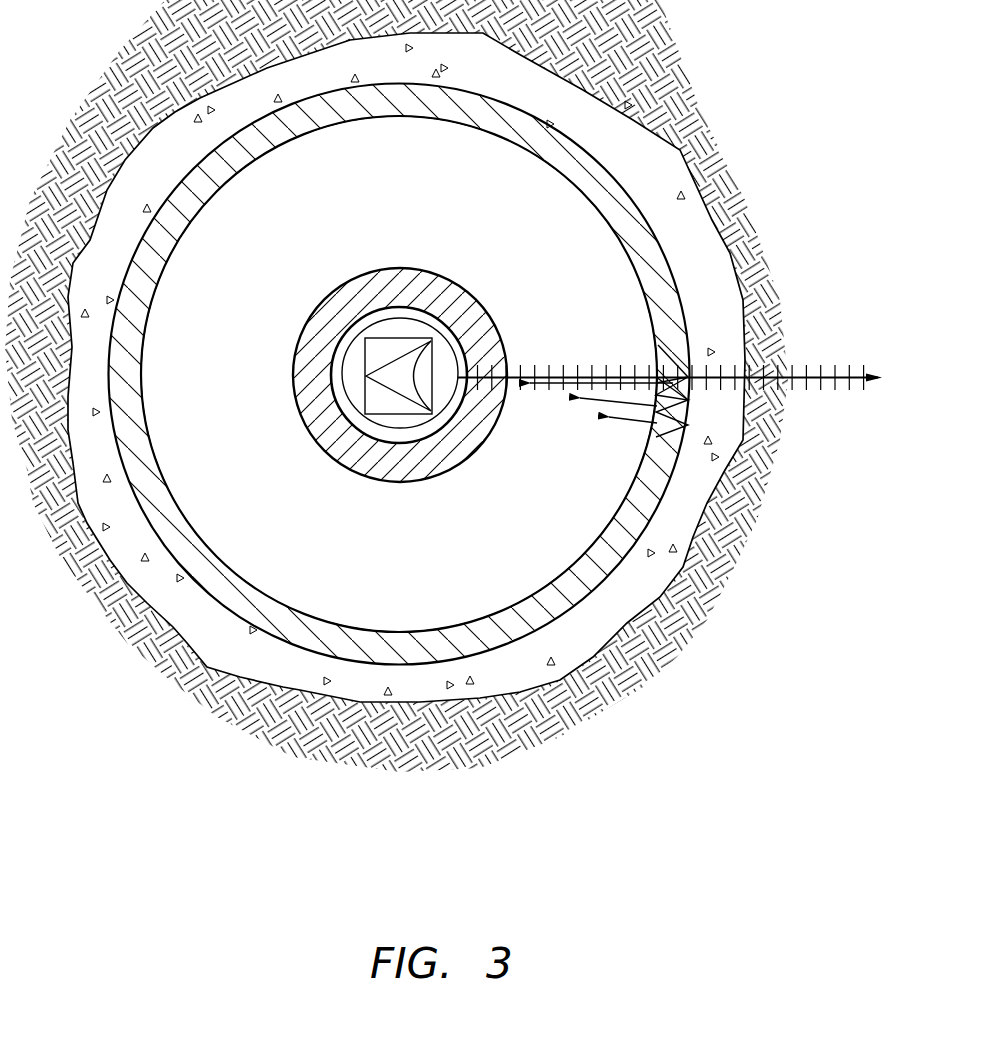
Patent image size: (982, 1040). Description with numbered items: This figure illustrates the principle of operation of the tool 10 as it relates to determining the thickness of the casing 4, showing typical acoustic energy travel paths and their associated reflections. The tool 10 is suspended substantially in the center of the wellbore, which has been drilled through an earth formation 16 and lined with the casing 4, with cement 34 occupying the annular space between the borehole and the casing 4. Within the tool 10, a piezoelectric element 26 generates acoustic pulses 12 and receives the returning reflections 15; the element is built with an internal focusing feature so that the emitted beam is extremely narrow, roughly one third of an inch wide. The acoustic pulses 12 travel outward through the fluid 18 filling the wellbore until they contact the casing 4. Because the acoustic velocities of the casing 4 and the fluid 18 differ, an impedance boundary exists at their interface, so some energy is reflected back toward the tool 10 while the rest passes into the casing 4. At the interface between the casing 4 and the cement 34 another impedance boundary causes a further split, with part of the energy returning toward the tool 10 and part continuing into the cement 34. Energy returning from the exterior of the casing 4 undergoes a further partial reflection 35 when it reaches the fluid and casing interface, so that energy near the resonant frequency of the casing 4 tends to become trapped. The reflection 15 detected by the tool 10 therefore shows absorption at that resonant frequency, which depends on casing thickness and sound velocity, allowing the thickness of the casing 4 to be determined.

The casing 4 is at (663, 298).
The tool 10 is at (400, 262).
The acoustic pulses 12 is at (594, 370).
The reflections 15 is at (627, 422).
The earth formation 16 is at (796, 607).
The fluid 18 is at (406, 554).
The piezoelectric element 26 is at (388, 348).
The cement 34 is at (723, 337).
The partial reflection 35 is at (684, 437).